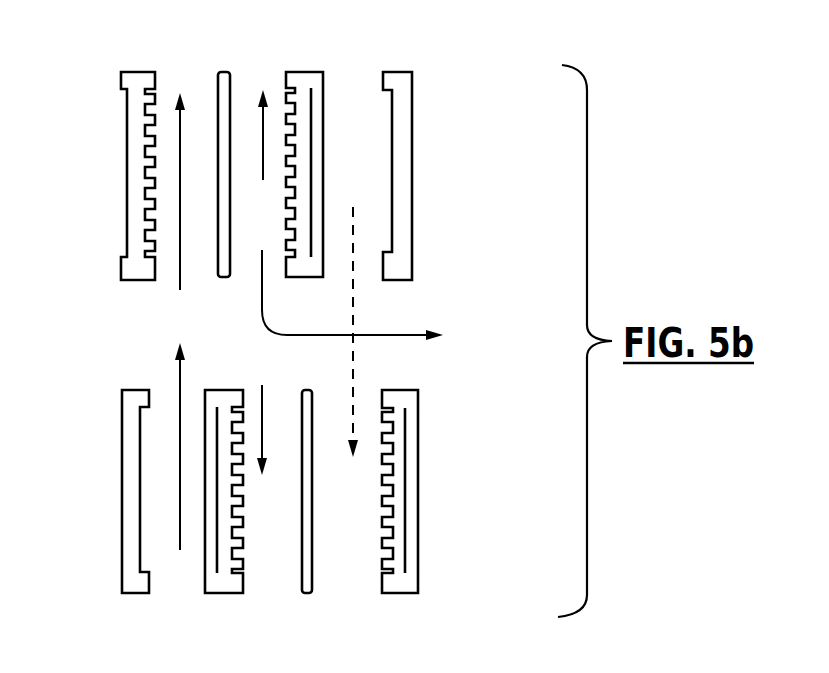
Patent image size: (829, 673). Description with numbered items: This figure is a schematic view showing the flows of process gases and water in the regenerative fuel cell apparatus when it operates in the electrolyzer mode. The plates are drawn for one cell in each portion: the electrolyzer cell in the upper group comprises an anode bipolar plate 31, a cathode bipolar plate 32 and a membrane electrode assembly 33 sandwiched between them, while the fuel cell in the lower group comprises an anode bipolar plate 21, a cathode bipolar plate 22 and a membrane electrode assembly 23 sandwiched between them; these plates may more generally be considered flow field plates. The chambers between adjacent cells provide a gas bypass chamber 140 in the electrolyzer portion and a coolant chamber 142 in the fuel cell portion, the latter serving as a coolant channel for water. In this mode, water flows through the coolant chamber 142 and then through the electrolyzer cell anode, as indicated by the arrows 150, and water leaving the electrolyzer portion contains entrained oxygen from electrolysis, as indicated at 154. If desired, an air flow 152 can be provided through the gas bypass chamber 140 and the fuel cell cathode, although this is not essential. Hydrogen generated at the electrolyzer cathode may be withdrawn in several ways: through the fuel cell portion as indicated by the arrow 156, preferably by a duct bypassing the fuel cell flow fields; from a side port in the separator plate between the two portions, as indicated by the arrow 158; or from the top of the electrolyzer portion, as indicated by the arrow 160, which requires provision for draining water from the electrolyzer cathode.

The anode bipolar plate 21 is at (215, 585).
The cathode bipolar plate 22 is at (130, 585).
The membrane electrode assembly 23 is at (305, 592).
The anode bipolar plate 31 is at (137, 80).
The cathode bipolar plate 32 is at (310, 74).
The membrane electrode assembly 33 is at (225, 70).
The gas bypass chamber 140 is at (367, 157).
The coolant chamber 142 is at (160, 500).
The water flow arrows 150 is at (180, 388).
The air flow 152 is at (353, 295).
The water with entrained oxygen flow 154 is at (180, 112).
The hydrogen withdrawal arrow 156 is at (262, 388).
The hydrogen withdrawal arrow 158 is at (412, 336).
The hydrogen withdrawal arrow 160 is at (266, 114).